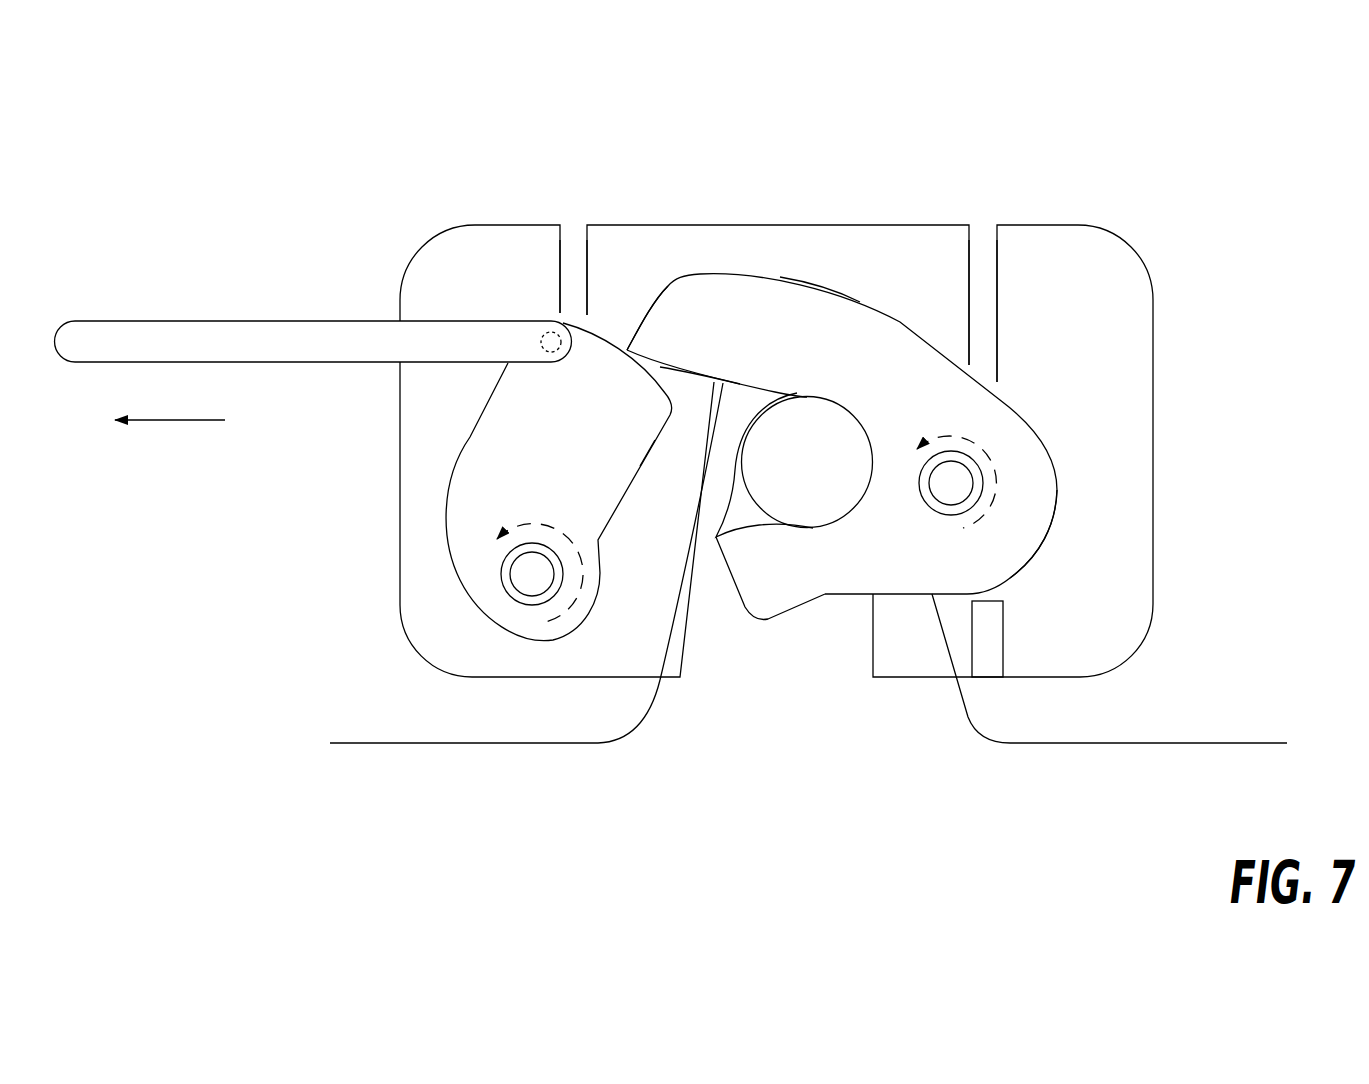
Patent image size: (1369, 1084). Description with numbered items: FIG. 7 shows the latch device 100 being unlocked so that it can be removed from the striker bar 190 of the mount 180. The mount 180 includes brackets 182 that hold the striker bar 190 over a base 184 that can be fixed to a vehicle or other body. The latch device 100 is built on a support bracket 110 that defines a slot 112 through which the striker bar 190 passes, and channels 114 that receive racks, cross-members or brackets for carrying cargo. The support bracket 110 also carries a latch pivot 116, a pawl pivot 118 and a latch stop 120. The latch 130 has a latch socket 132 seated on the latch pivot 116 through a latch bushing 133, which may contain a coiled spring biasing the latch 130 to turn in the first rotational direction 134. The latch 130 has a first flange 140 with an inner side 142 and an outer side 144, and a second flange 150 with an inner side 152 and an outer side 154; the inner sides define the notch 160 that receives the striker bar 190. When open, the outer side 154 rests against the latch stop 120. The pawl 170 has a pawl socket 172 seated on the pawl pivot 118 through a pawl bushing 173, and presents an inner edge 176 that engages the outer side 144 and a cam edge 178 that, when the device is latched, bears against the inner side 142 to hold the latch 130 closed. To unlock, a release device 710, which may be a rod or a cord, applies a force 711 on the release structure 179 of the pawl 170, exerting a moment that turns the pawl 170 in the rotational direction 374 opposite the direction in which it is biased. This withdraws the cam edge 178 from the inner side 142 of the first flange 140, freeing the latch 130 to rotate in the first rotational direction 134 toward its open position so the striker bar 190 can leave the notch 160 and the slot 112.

The latch device 100 is at (178, 243).
The support bracket 110 is at (398, 318).
The slot 112 is at (727, 398).
The channels 114 is at (576, 240).
The latch pivot 116 is at (952, 483).
The pawl pivot 118 is at (531, 575).
The latch stop 120 is at (1003, 640).
The latch 130 is at (970, 411).
The latch socket 132 is at (983, 493).
The latch bushing 133 is at (983, 478).
The first rotational direction 134 is at (951, 436).
The first flange 140 is at (877, 352).
The inner side of first flange 142 is at (668, 356).
The outer side of first flange 144 is at (830, 288).
The second flange 150 is at (1010, 550).
The inner side of second flange 152 is at (836, 540).
The outer side of second flange 154 is at (874, 600).
The notch 160 is at (736, 512).
The pawl 170 is at (483, 480).
The pawl socket 172 is at (502, 557).
The pawl bushing 173 is at (504, 569).
The inner edge 176 is at (634, 462).
The cam edge 178 is at (628, 338).
The release structure 179 is at (540, 335).
The mount 180 is at (717, 564).
The brackets 182 is at (982, 725).
The base 184 is at (1168, 743).
The striker bar 190 is at (813, 532).
The rotational direction of the pawl 374 is at (547, 620).
The release device 710 is at (137, 321).
The force 711 is at (176, 426).